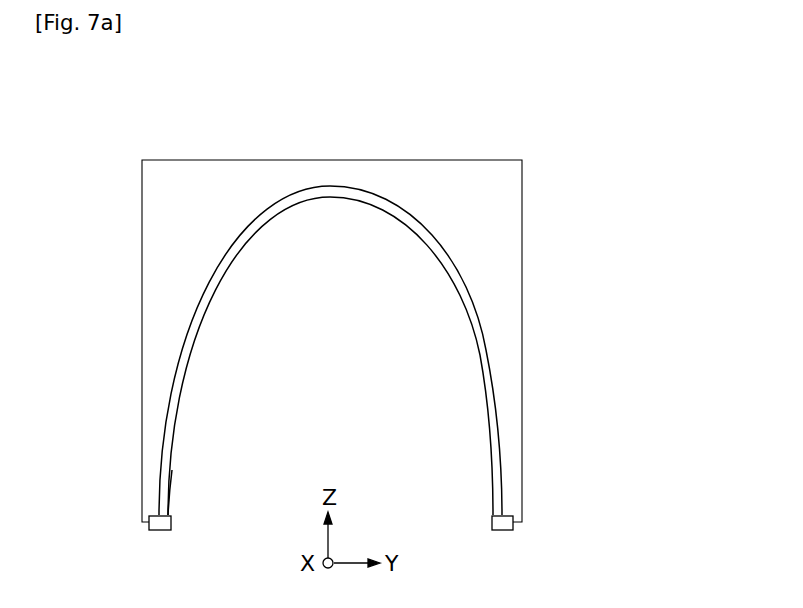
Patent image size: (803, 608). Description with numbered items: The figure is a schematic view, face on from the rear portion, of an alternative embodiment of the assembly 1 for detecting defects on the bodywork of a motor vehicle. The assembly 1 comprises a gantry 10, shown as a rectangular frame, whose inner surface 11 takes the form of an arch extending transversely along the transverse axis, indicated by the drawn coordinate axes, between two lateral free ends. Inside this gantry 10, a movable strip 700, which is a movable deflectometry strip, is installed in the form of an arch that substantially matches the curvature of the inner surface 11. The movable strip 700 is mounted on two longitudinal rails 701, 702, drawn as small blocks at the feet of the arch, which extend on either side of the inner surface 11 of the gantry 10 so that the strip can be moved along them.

The assembly 1 is at (166, 139).
The gantry 10 is at (202, 160).
The inner surface 11 is at (207, 287).
The movable strip 700 is at (190, 357).
The longitudinal rail 701 is at (173, 523).
The longitudinal rail 702 is at (491, 523).